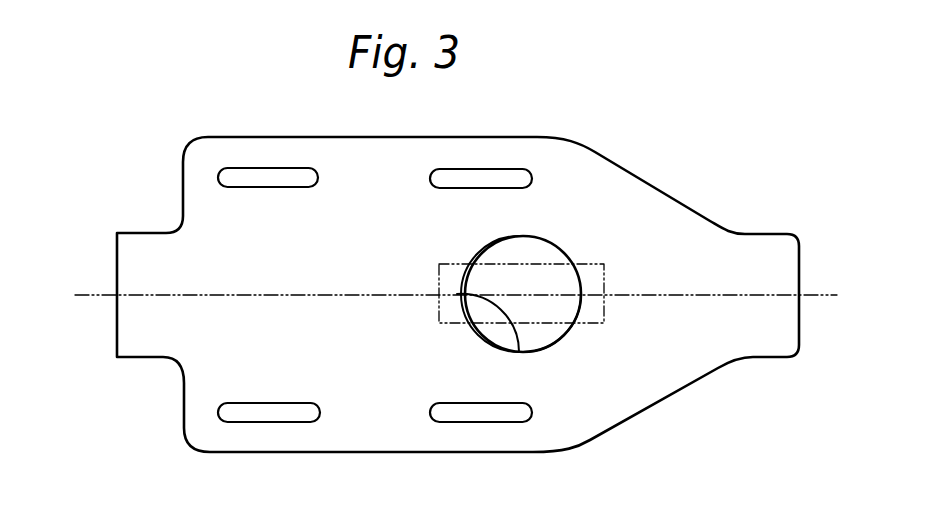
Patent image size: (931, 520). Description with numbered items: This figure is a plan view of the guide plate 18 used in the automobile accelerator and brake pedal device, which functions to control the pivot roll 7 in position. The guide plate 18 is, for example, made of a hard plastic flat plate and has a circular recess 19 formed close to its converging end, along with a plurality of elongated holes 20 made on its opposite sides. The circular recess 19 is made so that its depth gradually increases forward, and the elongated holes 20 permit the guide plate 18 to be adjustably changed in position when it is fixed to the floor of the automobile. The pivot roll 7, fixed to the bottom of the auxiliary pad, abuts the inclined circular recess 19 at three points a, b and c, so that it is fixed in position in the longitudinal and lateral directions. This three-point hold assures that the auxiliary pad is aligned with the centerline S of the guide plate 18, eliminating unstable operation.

The guide plate 18 is at (182, 257).
The elongated holes 20 is at (448, 168).
The circular recess 19 is at (533, 250).
The pivot roll 7 is at (603, 263).
The centerline S is at (103, 293).
The abutment point a is at (470, 265).
The abutment point b is at (467, 323).
The abutment point c is at (562, 300).